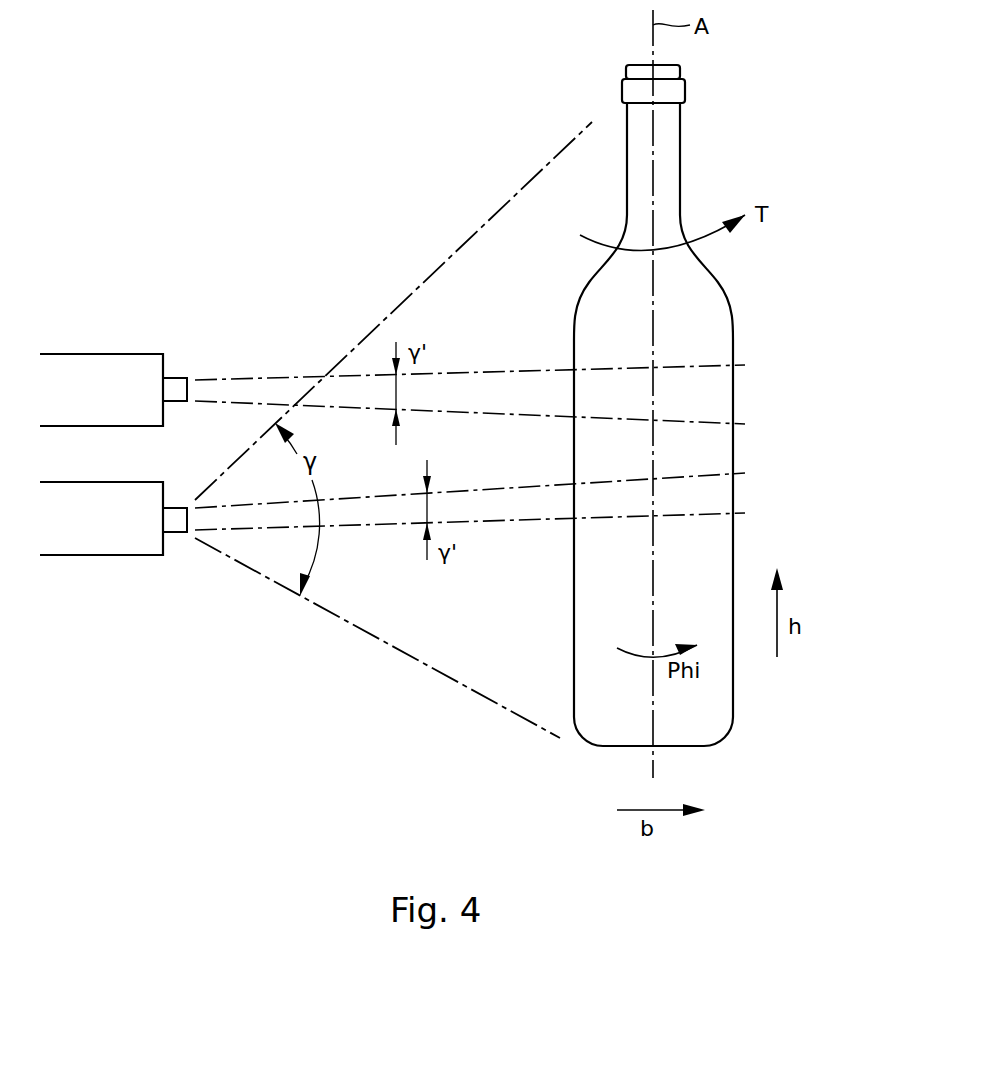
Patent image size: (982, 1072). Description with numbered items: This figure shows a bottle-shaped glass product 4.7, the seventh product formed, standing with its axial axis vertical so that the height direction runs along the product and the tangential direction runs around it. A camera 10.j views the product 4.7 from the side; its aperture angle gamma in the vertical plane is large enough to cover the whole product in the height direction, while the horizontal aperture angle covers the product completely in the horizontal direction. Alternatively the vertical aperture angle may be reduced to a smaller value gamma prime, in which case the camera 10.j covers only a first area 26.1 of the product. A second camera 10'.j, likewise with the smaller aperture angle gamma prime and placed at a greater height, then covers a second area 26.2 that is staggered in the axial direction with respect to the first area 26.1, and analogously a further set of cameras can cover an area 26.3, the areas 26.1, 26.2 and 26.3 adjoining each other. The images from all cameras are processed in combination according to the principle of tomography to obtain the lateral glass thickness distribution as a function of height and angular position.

The glass product 4.7 is at (596, 450).
The camera 10.j is at (100, 555).
The second inspection unit / camera 10'.j is at (113, 356).
The first area 26.1 is at (718, 493).
The second area 26.2 is at (718, 393).
The area 26.3 is at (718, 447).